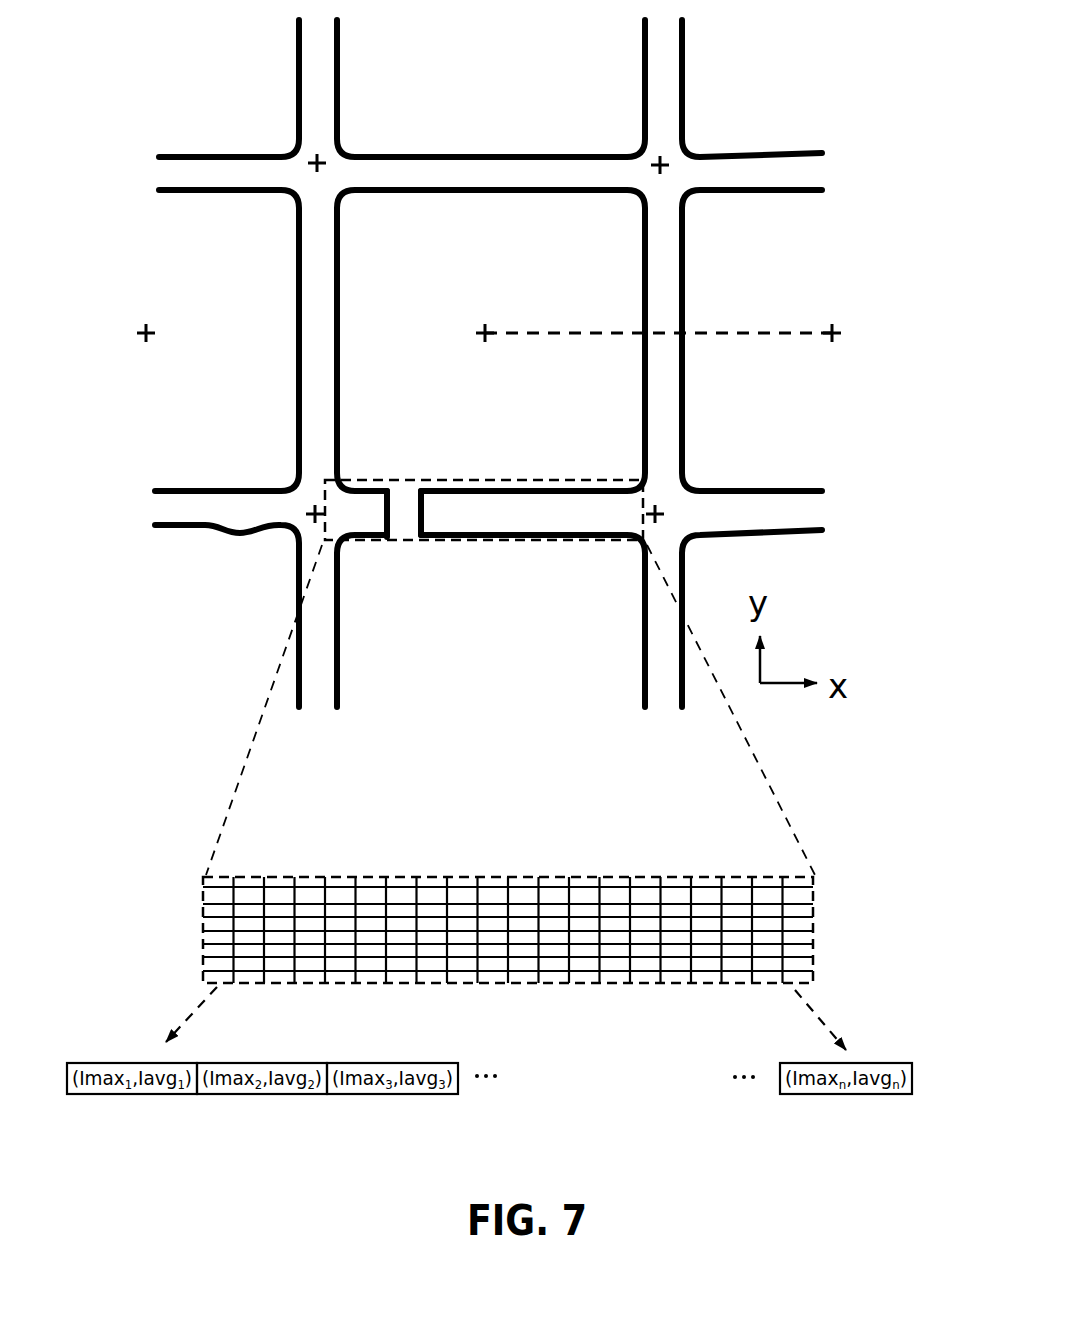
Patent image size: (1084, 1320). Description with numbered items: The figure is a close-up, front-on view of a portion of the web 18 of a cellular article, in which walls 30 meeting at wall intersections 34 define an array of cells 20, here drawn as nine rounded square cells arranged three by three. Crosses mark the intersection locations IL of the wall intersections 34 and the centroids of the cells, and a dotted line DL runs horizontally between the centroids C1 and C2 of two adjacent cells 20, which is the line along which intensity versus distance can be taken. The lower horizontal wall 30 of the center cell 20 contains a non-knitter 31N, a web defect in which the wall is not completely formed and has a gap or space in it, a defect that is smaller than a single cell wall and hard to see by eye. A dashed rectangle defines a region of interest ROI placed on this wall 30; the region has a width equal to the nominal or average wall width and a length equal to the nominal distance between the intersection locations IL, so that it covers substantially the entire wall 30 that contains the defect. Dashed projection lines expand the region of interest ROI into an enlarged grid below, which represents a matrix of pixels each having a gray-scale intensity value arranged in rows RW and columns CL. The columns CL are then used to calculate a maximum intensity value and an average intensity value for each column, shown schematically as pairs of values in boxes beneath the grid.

The web 18 is at (150, 46).
The cell 20 is at (181, 266).
The wall 30 is at (490, 167).
The wall intersection 34 is at (350, 183).
The non-knitter 31N is at (400, 517).
The intersection location IL is at (317, 163).
The dotted line DL is at (558, 333).
The centroid C1 is at (486, 335).
The centroid C2 is at (832, 335).
The region of interest ROI is at (455, 540).
The column CL is at (305, 872).
The row RW is at (822, 899).